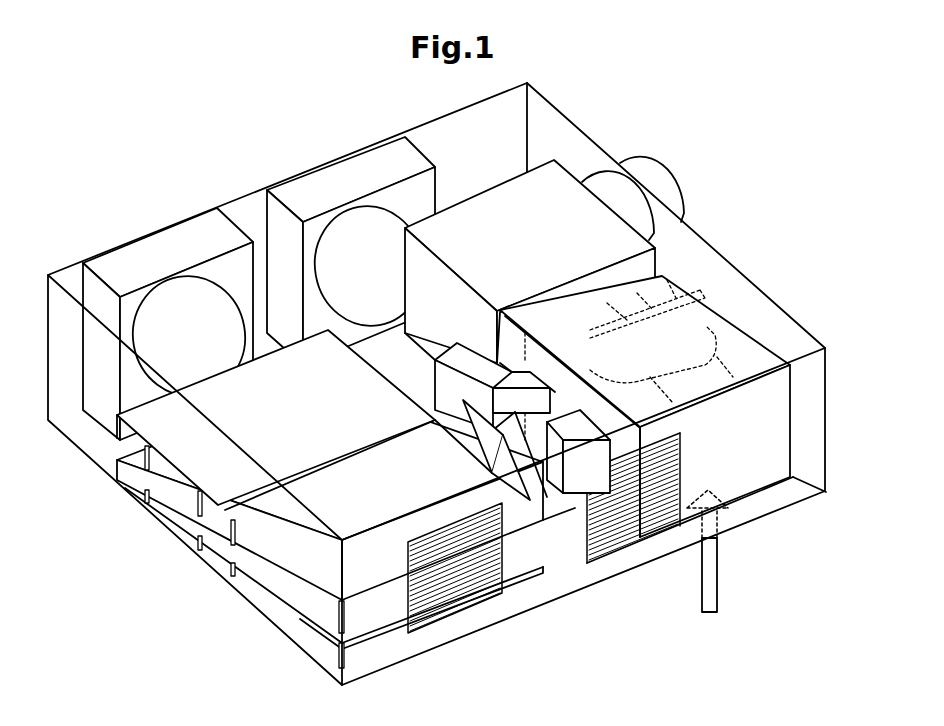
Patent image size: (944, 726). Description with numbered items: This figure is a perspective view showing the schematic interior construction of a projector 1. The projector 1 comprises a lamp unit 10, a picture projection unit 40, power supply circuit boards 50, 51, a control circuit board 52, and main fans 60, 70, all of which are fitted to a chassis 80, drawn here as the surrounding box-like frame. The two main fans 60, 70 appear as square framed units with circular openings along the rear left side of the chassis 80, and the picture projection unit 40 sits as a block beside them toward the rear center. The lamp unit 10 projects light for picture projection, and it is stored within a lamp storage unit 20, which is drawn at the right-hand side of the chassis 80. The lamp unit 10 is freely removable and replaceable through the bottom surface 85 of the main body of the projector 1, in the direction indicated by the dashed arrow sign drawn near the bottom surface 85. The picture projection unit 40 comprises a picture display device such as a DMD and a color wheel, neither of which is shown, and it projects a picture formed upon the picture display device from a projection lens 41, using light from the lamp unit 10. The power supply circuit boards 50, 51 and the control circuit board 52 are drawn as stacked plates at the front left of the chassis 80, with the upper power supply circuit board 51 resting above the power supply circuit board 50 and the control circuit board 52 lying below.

The projector 1 is at (657, 104).
The lamp unit 10 is at (707, 330).
The lamp storage unit 20 is at (680, 272).
The picture projection unit 40 is at (509, 208).
The projection lens 41 is at (660, 185).
The power supply circuit board 50 is at (288, 558).
The power supply circuit board 51 is at (212, 477).
The control circuit board 52 is at (288, 600).
The main fan 60 is at (203, 227).
The main fan 70 is at (380, 162).
The chassis 80 is at (540, 90).
The bottom surface 85 is at (555, 586).